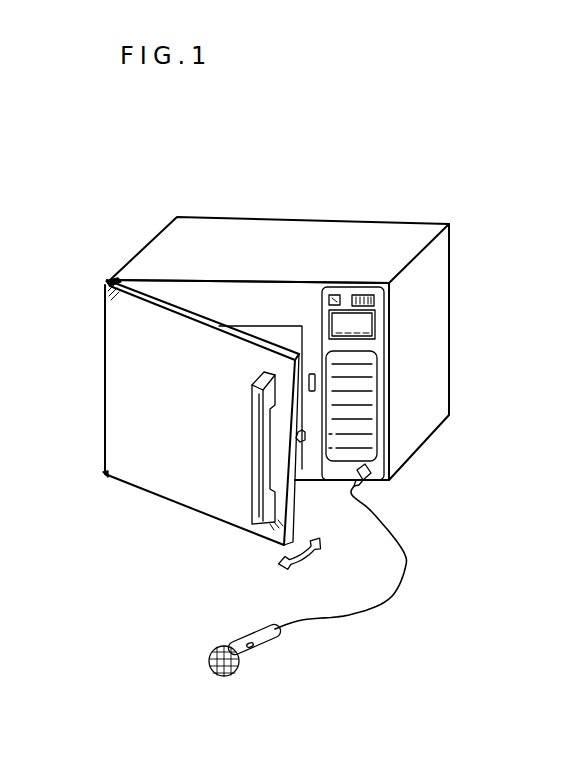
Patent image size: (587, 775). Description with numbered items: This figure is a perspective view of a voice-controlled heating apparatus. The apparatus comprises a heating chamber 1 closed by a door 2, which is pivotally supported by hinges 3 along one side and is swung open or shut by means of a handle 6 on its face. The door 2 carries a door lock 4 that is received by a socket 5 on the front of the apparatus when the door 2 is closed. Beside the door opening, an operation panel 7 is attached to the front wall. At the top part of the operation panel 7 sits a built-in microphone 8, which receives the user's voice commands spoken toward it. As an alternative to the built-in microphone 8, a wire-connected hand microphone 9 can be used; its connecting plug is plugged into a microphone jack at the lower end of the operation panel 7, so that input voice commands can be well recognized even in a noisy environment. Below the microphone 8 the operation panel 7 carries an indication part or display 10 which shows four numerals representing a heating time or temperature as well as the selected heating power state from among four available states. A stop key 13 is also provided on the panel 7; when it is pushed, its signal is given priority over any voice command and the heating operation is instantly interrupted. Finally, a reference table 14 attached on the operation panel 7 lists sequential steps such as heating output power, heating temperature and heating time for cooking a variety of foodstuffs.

The heating chamber 1 is at (257, 328).
The door 2 is at (163, 487).
The hinges 3 is at (105, 278).
The door lock 4 is at (303, 436).
The socket 5 is at (311, 370).
The handle 6 is at (253, 490).
The operation panel 7 is at (375, 305).
The built-in microphone 8 is at (357, 290).
The wire-connected hand microphone 9 is at (257, 650).
The indication part (display) 10 is at (372, 322).
The stop key 13 is at (329, 292).
The reference table 14 is at (377, 345).